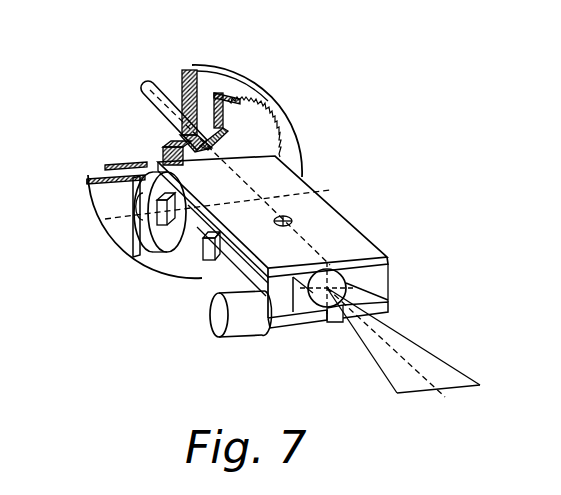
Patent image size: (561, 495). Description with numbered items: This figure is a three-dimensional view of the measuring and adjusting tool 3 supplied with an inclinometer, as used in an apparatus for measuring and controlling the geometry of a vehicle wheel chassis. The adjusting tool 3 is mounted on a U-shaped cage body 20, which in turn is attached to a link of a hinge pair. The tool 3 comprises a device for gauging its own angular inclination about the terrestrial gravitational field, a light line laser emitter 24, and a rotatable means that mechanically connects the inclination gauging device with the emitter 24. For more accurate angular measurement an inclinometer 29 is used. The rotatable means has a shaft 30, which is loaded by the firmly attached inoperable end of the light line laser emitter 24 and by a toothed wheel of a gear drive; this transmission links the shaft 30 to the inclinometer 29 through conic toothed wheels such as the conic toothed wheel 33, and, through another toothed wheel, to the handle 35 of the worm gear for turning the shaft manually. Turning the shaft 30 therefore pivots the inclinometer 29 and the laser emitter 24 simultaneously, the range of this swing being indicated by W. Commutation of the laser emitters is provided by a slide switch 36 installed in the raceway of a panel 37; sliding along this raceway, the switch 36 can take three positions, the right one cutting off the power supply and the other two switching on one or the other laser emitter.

The measuring and adjusting tool 3 is at (296, 115).
The U-shaped cage body 20 is at (327, 225).
The light line laser emitter 24 is at (328, 286).
The inclinometer 29 is at (161, 228).
The shaft 30 is at (288, 217).
The conic toothed wheel 33 is at (187, 225).
The handle of the worm gear 35 is at (223, 322).
The slide switch 36 is at (205, 255).
The panel 37 is at (275, 306).
The swing range W is at (402, 368).